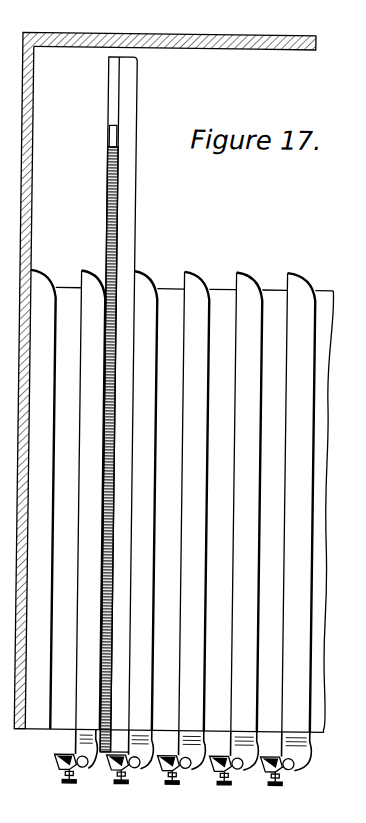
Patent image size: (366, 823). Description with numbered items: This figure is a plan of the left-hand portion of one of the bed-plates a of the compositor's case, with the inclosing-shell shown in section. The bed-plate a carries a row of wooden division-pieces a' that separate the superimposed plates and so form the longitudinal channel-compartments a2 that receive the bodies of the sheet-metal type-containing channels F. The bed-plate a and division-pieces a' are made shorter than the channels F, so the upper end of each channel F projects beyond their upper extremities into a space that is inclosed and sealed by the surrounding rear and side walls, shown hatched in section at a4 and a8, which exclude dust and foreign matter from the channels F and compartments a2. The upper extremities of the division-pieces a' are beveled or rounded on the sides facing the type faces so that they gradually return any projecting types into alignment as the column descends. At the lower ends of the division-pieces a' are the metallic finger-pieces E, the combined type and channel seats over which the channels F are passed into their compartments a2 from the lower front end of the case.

The bed-plate a is at (169, 501).
The division-piece a' is at (170, 501).
The channel-compartment a2 is at (82, 499).
The back plate a4 is at (169, 30).
The side wall of frame a8 is at (35, 387).
The type-containing channel F is at (118, 404).
The finger-piece E is at (172, 762).